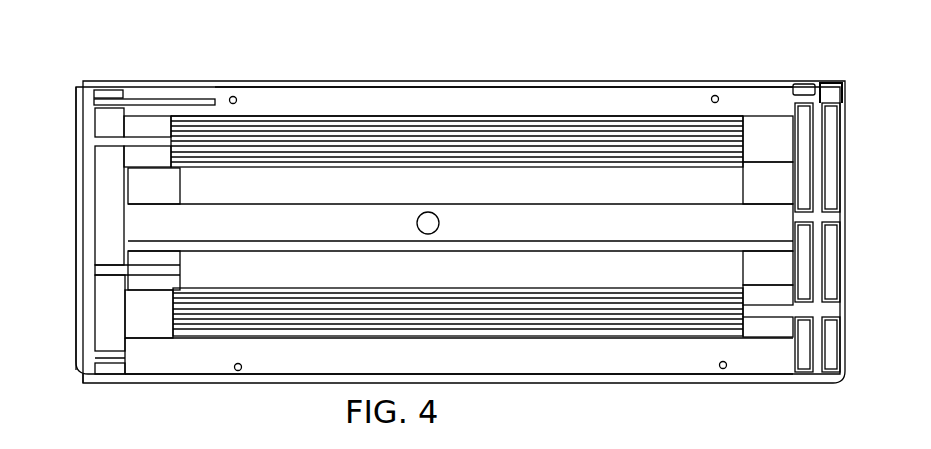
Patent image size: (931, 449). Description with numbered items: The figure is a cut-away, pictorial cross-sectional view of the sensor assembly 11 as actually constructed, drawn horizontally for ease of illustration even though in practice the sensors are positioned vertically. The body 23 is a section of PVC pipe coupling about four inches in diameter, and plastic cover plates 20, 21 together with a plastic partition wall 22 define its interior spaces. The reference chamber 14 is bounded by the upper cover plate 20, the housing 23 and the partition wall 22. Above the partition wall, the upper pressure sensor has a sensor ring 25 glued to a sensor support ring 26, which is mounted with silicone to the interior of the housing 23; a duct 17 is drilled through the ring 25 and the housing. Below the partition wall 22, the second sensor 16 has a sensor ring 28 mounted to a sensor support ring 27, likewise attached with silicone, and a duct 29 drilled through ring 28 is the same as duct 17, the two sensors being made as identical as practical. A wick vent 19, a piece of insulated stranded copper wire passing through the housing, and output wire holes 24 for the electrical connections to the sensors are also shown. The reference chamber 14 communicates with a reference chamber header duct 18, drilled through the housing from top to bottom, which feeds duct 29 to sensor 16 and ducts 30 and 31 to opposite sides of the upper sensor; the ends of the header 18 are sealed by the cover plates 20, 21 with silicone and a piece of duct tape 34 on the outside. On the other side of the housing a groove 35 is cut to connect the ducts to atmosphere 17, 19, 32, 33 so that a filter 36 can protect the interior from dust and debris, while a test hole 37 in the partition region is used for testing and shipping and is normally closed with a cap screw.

The sensor assembly 11 is at (645, 58).
The reference chamber 14 is at (263, 97).
The sensor 16 is at (294, 318).
The duct 17 is at (103, 139).
The reference chamber header duct 18 is at (826, 92).
The wick vent 19 is at (113, 89).
The upper cover plate 20 is at (512, 80).
The cover plate 21 is at (518, 383).
The partition wall 22 is at (325, 241).
The body 23 is at (110, 372).
The output wire holes 24 is at (232, 97).
The sensor ring 25 is at (781, 151).
The sensor support ring 26 is at (781, 195).
The sensor support ring 27 is at (781, 278).
The sensor ring 28 is at (765, 322).
The duct 29 is at (744, 307).
The duct 30 is at (797, 222).
The duct 31 is at (797, 84).
The duct to atmosphere 32 is at (79, 384).
The duct to atmosphere 33 is at (95, 268).
The duct tape 34 is at (840, 244).
The groove 35 is at (83, 322).
The filter 36 is at (76, 214).
The test hole 37 is at (437, 216).